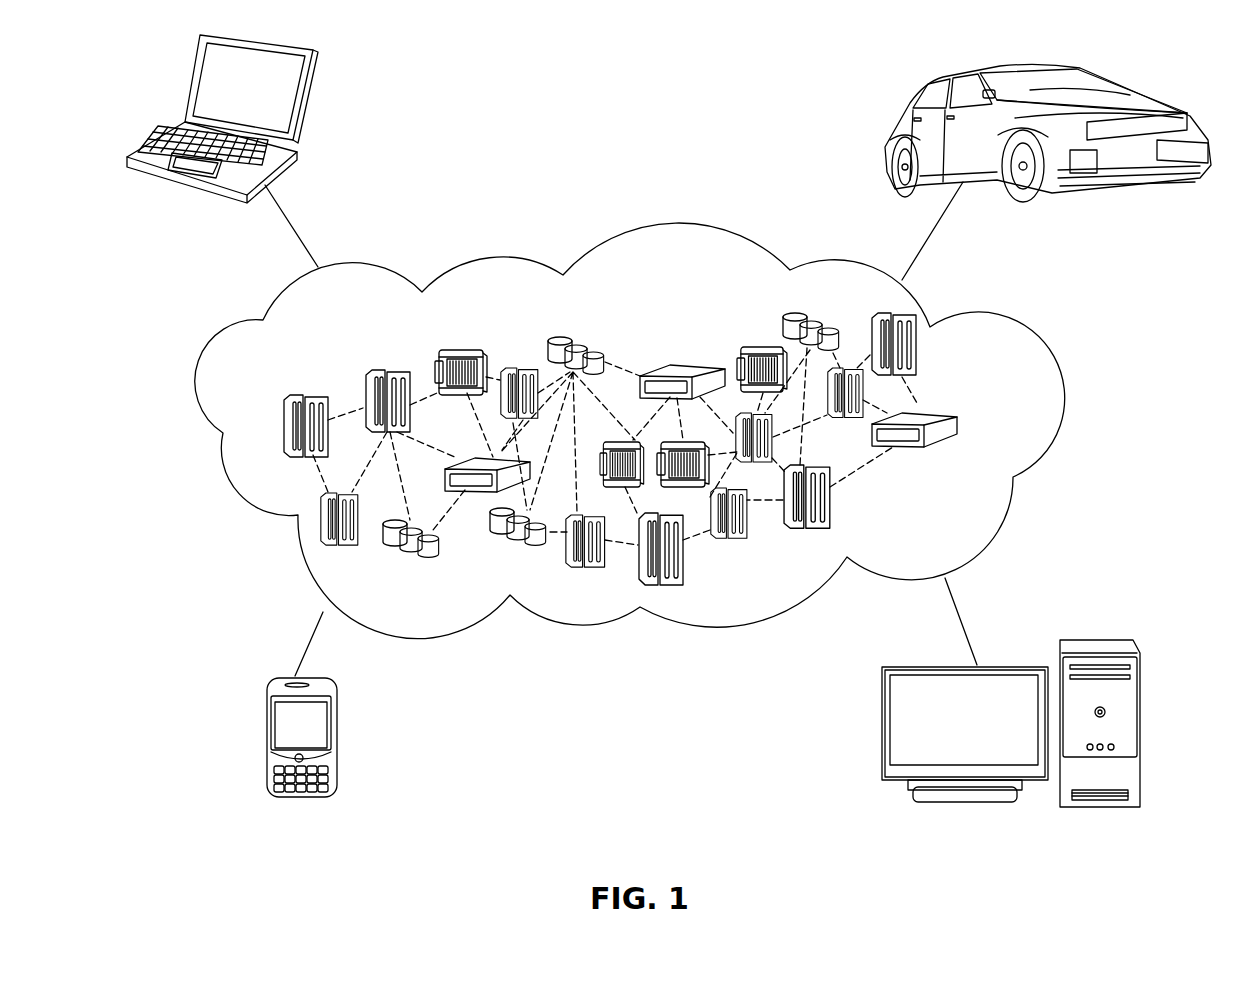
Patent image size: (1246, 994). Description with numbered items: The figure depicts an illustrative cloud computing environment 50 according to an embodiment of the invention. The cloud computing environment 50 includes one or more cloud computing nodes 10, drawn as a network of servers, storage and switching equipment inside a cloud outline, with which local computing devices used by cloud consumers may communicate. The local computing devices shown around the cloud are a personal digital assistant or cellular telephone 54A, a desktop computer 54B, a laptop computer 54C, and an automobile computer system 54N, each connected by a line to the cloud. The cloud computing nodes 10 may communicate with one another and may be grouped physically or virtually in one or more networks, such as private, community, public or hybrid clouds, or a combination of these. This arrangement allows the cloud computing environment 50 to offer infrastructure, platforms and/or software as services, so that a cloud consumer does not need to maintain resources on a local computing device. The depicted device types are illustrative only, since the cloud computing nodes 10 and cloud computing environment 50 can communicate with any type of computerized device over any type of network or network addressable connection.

The cloud computing nodes 10 is at (997, 423).
The cloud computing environment 50 is at (1022, 340).
The personal digital assistant (PDA) or cellular telephone 54A is at (267, 740).
The desktop computer 54B is at (1103, 640).
The laptop computer 54C is at (307, 107).
The automobile computer system 54N is at (893, 117).